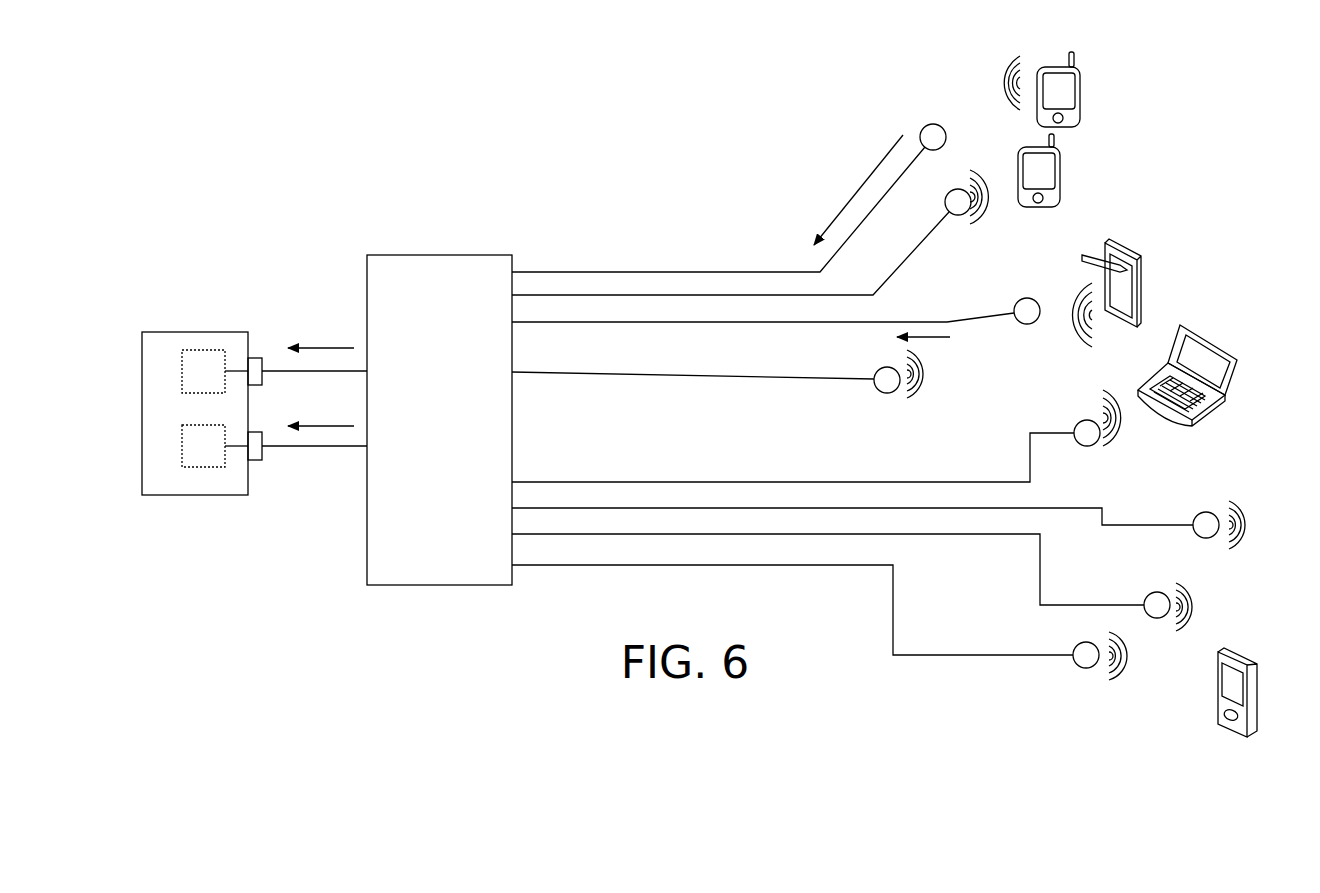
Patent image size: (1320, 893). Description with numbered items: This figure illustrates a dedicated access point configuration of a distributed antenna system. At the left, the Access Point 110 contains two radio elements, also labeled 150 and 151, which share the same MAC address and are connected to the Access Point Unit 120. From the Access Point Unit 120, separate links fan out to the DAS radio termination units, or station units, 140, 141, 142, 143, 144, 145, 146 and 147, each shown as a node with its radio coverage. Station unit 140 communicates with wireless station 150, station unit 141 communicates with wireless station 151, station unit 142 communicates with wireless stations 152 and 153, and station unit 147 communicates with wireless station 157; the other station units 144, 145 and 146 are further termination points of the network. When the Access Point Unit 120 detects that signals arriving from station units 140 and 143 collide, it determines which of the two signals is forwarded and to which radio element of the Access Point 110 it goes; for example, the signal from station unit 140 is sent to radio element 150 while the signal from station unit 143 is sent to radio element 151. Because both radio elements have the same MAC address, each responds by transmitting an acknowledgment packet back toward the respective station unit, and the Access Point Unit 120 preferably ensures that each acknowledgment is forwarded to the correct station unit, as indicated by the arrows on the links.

The Access Point 110 is at (189, 328).
The Access Point Unit 120 is at (438, 252).
The station unit 140 is at (926, 124).
The station unit 141 is at (952, 223).
The station unit 142 is at (1026, 296).
The station unit 143 is at (888, 396).
The station unit 144 is at (1099, 446).
The station unit 145 is at (1206, 541).
The station unit 146 is at (1148, 591).
The station unit 147 is at (1078, 666).
The wireless station 150 is at (206, 346).
The wireless station 151 is at (213, 471).
The wireless station 152 is at (1113, 241).
The wireless station 153 is at (1217, 339).
The wireless station 157 is at (1214, 683).